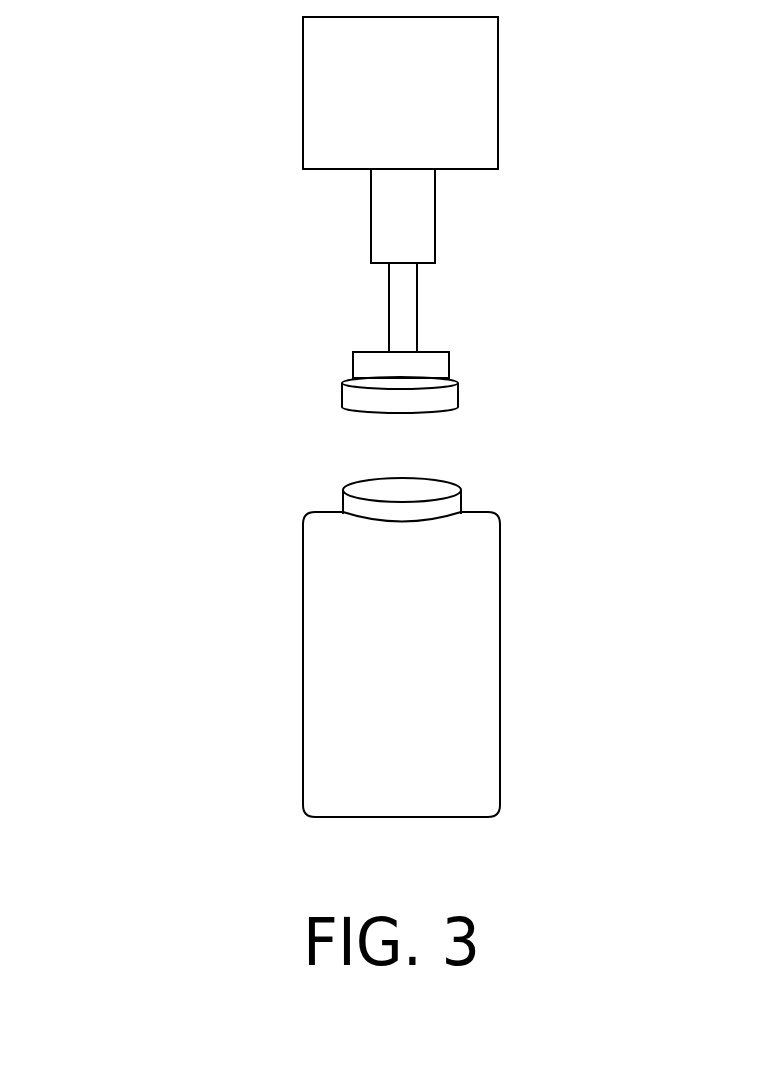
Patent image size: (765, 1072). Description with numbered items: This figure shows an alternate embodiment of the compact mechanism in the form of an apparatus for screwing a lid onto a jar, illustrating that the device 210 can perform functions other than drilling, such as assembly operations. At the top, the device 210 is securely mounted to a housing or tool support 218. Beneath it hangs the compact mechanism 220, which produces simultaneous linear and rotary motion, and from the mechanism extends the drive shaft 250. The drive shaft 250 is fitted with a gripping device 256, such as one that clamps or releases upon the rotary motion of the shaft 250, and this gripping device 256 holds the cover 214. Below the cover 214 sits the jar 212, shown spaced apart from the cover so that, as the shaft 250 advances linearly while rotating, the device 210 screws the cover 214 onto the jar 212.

The device 210 is at (203, 273).
The jar 212 is at (390, 692).
The cover 214 is at (342, 383).
The housing or tool support 218 is at (303, 94).
The compact mechanism 220 is at (371, 217).
The drive shaft 250 is at (389, 307).
The gripping device 256 is at (353, 362).